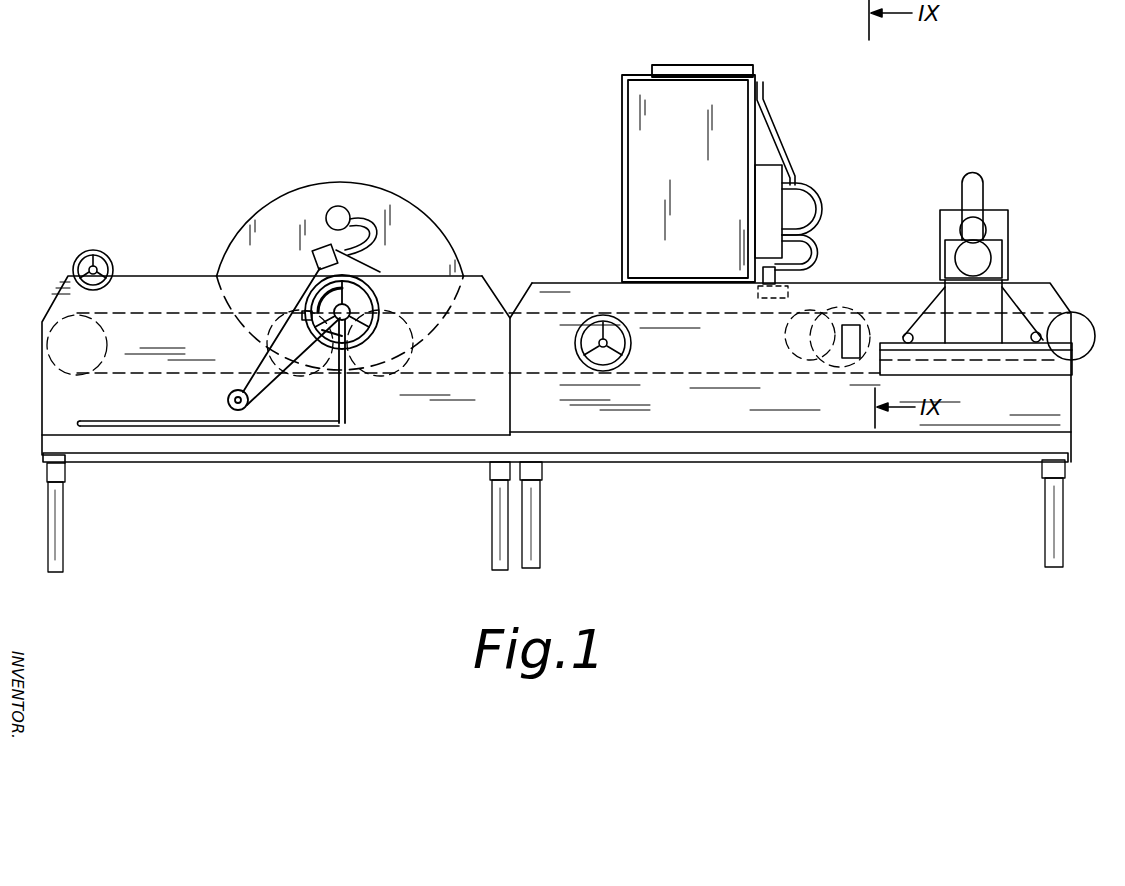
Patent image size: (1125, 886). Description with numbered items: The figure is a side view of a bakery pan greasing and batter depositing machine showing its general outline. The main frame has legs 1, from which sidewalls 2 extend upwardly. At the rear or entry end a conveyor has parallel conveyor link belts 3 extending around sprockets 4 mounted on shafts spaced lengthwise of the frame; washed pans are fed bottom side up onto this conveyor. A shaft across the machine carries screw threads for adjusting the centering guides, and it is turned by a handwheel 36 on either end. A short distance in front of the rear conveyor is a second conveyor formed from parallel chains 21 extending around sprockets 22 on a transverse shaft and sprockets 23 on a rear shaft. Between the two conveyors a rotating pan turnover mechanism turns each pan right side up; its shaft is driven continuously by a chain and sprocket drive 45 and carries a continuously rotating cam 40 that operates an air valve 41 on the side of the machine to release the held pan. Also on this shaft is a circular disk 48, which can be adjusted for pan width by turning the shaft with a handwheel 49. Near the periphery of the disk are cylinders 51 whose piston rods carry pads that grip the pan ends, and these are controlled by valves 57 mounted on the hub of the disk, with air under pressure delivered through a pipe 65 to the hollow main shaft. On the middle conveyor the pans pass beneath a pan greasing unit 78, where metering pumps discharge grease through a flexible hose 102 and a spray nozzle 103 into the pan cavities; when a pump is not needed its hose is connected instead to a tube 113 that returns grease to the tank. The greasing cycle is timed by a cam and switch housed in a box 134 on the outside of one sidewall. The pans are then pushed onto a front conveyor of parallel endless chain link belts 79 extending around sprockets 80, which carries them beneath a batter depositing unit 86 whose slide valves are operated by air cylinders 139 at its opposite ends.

The legs 1 is at (64, 548).
The sidewalls 2 is at (558, 420).
The conveyor link belts 3 is at (152, 313).
The sprockets 4 is at (50, 358).
The chains 21 is at (657, 303).
The sprockets 22 is at (838, 314).
The sprockets 23 is at (372, 388).
The handwheel 36 is at (112, 263).
The cam 40 is at (326, 323).
The air valve 41 is at (303, 311).
The chain and sprocket drive 45 is at (286, 392).
The circular disk 48 is at (418, 226).
The handwheel 49 is at (378, 306).
The cylinders 51 is at (335, 206).
The valves 57 is at (314, 258).
The pipe 65 is at (204, 421).
The pan greasing unit 78 is at (702, 60).
The chain link belts 79 is at (900, 310).
The sprockets 80 is at (790, 335).
The batter depositing unit 86 is at (1005, 227).
The flexible hose 102 is at (815, 195).
The spray nozzle 103 is at (757, 293).
The tube 113 is at (780, 135).
The box 134 is at (850, 360).
The air cylinders 139 is at (991, 258).